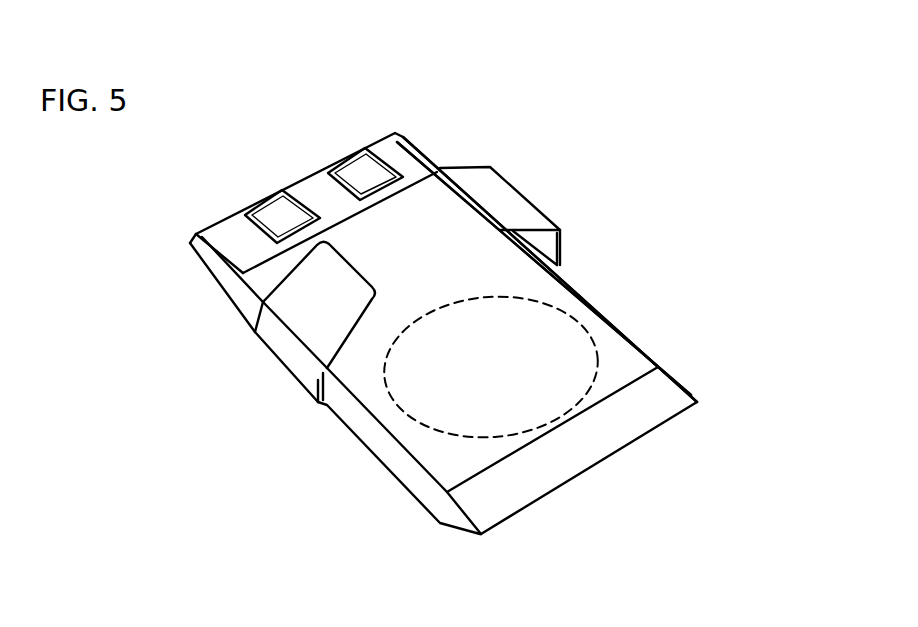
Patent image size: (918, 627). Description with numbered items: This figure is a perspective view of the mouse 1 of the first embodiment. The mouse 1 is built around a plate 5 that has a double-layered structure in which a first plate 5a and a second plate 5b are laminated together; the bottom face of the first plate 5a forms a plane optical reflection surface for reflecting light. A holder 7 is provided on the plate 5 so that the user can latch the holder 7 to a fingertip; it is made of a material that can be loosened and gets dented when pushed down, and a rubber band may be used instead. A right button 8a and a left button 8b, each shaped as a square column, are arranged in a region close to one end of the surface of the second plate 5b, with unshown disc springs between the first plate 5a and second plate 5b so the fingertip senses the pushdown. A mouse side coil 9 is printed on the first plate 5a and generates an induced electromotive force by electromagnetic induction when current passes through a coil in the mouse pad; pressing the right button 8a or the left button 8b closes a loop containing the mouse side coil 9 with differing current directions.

The mouse 1 is at (603, 505).
The plate 5 is at (630, 357).
The first plate 5a is at (627, 319).
The second plate 5b is at (573, 307).
The holder 7 is at (283, 342).
The right button 8a is at (357, 157).
The left button 8b is at (275, 195).
The mouse side coil 9 is at (413, 420).